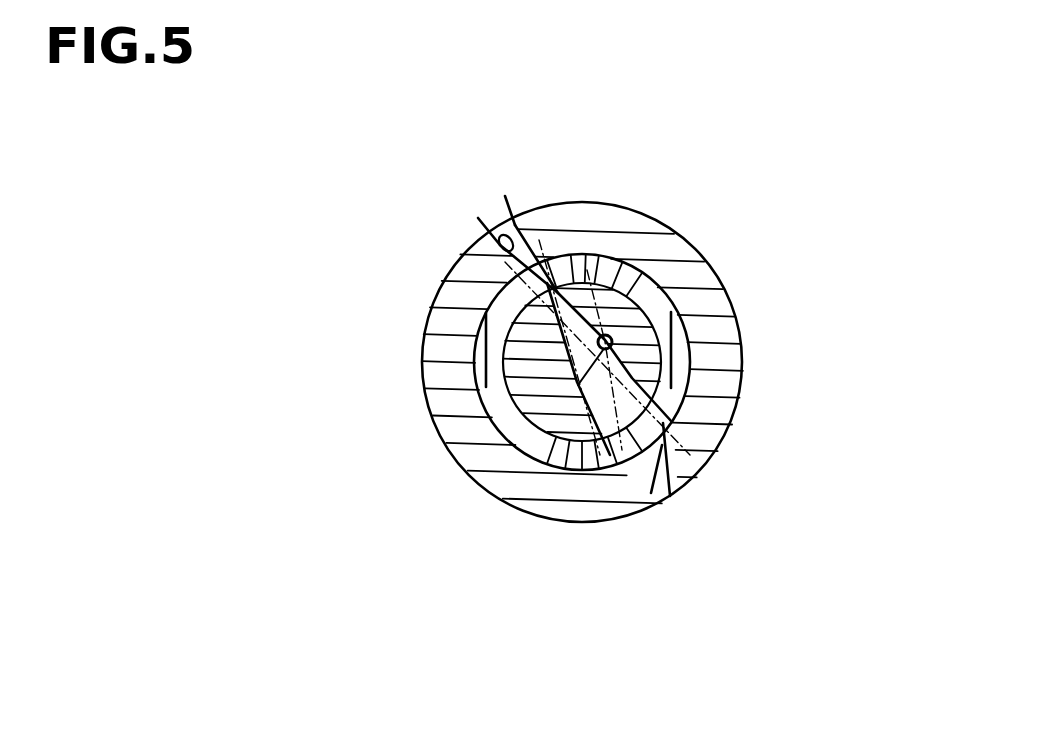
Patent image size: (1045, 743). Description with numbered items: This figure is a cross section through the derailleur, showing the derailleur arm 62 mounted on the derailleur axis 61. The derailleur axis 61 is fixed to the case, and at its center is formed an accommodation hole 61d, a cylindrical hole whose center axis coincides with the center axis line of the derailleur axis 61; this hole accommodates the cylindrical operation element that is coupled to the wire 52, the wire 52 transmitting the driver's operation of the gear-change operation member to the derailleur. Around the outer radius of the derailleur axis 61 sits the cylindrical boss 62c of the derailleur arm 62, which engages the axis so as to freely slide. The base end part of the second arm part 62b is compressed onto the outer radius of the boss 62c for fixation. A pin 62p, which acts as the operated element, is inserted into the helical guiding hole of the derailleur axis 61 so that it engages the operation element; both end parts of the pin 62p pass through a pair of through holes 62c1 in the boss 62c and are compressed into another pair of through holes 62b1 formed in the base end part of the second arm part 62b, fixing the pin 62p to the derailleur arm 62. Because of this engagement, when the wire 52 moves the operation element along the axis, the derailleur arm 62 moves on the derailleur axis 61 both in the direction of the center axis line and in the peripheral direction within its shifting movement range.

The wire 52 is at (618, 328).
The derailleur axis 61 is at (537, 400).
The accommodation hole 61d is at (486, 392).
The derailleur arm 62 is at (748, 295).
The second arm part 62b is at (725, 387).
The through holes 62b1 is at (517, 228).
The boss 62c is at (550, 455).
The through holes 62c1 is at (478, 272).
The pin 62p is at (485, 255).